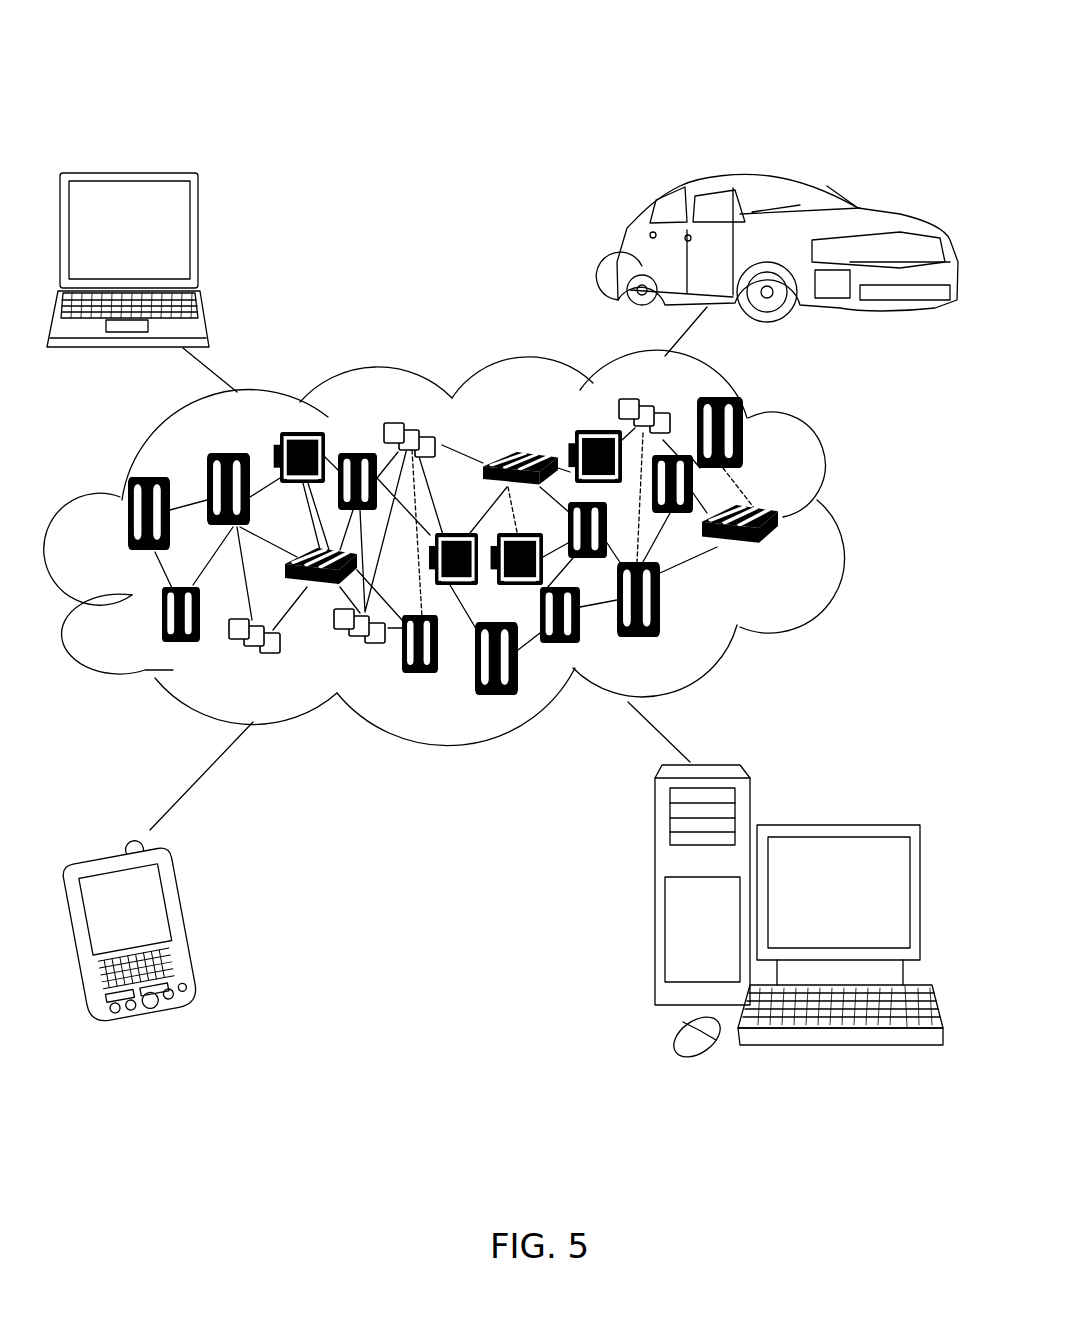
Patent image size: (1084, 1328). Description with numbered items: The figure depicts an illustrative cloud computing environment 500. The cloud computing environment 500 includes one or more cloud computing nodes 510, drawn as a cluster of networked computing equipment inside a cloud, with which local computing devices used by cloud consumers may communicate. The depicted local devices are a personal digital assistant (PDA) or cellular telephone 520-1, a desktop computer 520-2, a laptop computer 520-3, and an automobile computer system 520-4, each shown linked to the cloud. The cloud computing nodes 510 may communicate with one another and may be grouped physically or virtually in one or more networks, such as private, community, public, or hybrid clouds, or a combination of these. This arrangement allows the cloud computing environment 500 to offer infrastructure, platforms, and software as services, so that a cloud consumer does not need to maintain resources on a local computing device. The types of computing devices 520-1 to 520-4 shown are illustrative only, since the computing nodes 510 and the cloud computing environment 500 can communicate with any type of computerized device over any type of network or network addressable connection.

The cloud computing environment 500 is at (782, 28).
The cloud computing nodes 510 is at (788, 557).
The personal digital assistant (PDA) or cellular telephone 520-1 is at (188, 921).
The desktop computer 520-2 is at (848, 805).
The laptop computer 520-3 is at (199, 240).
The automobile computer system 520-4 is at (620, 253).